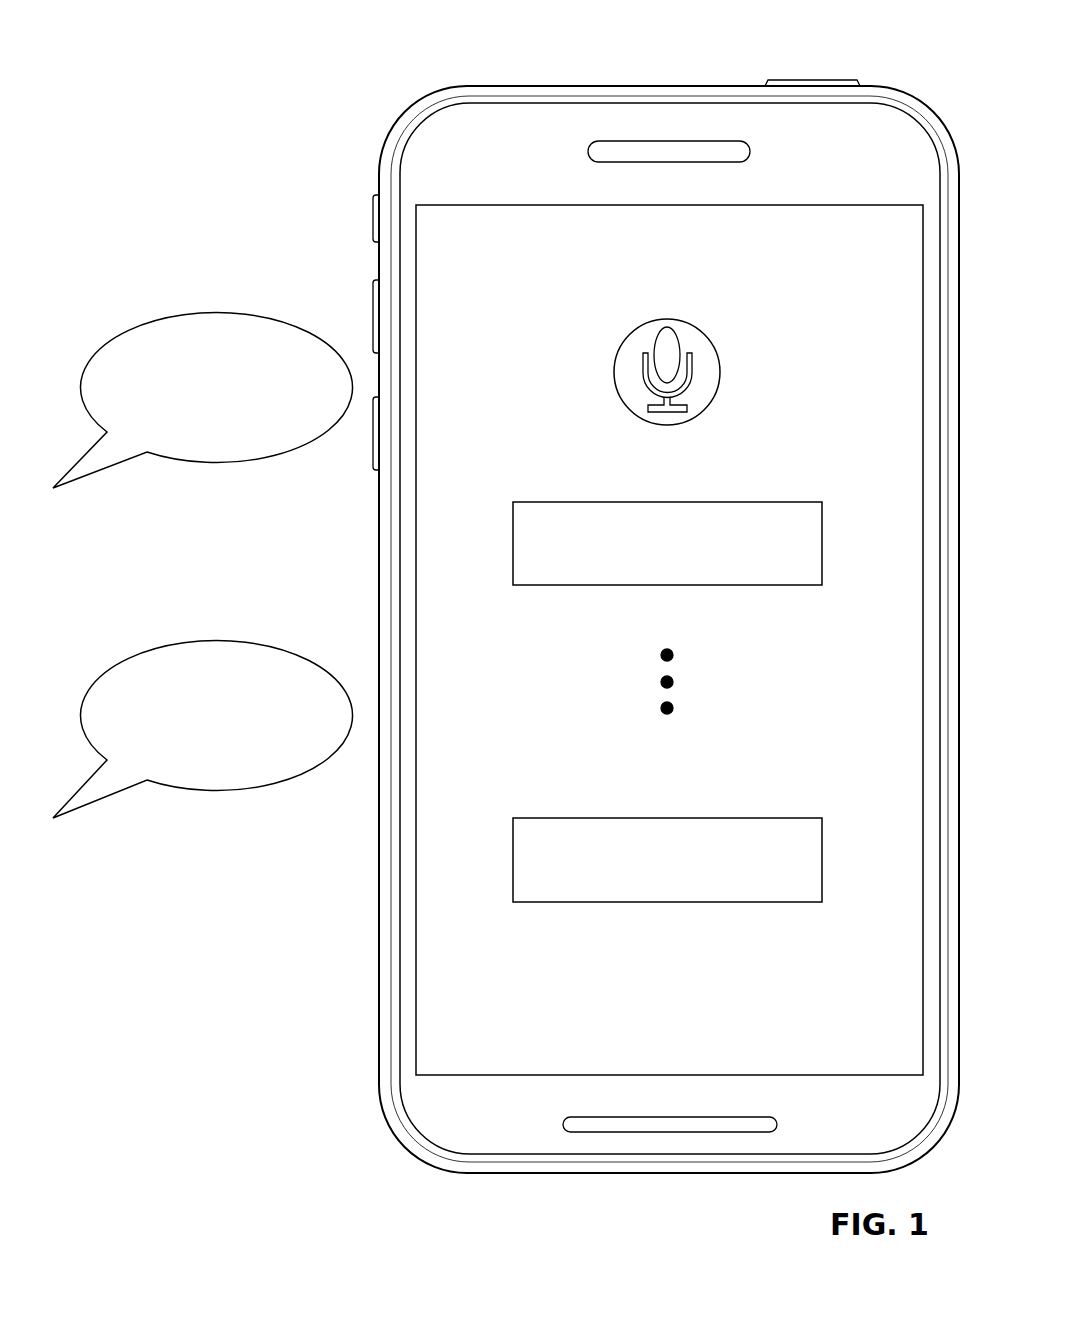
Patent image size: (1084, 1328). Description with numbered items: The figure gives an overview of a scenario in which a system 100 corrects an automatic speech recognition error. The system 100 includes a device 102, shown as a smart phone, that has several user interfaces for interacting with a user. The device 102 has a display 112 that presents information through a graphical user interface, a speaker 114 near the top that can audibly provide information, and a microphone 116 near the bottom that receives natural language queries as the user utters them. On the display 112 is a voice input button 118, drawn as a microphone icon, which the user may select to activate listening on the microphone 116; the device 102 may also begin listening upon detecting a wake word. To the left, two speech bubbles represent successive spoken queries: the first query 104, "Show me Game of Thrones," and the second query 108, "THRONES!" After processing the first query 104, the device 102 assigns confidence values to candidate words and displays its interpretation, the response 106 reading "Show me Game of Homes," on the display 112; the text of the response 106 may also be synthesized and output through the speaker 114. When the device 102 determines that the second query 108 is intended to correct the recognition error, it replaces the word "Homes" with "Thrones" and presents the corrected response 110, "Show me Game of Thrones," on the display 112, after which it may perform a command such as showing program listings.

The system 100 is at (133, 57).
The device 102 is at (502, 86).
The query 104 is at (255, 317).
The response 106 is at (607, 502).
The query 108 is at (255, 645).
The response 110 is at (607, 818).
The display 112 is at (835, 268).
The speaker 114 is at (670, 157).
The microphone 116 is at (670, 1119).
The voice input button 118 is at (710, 378).